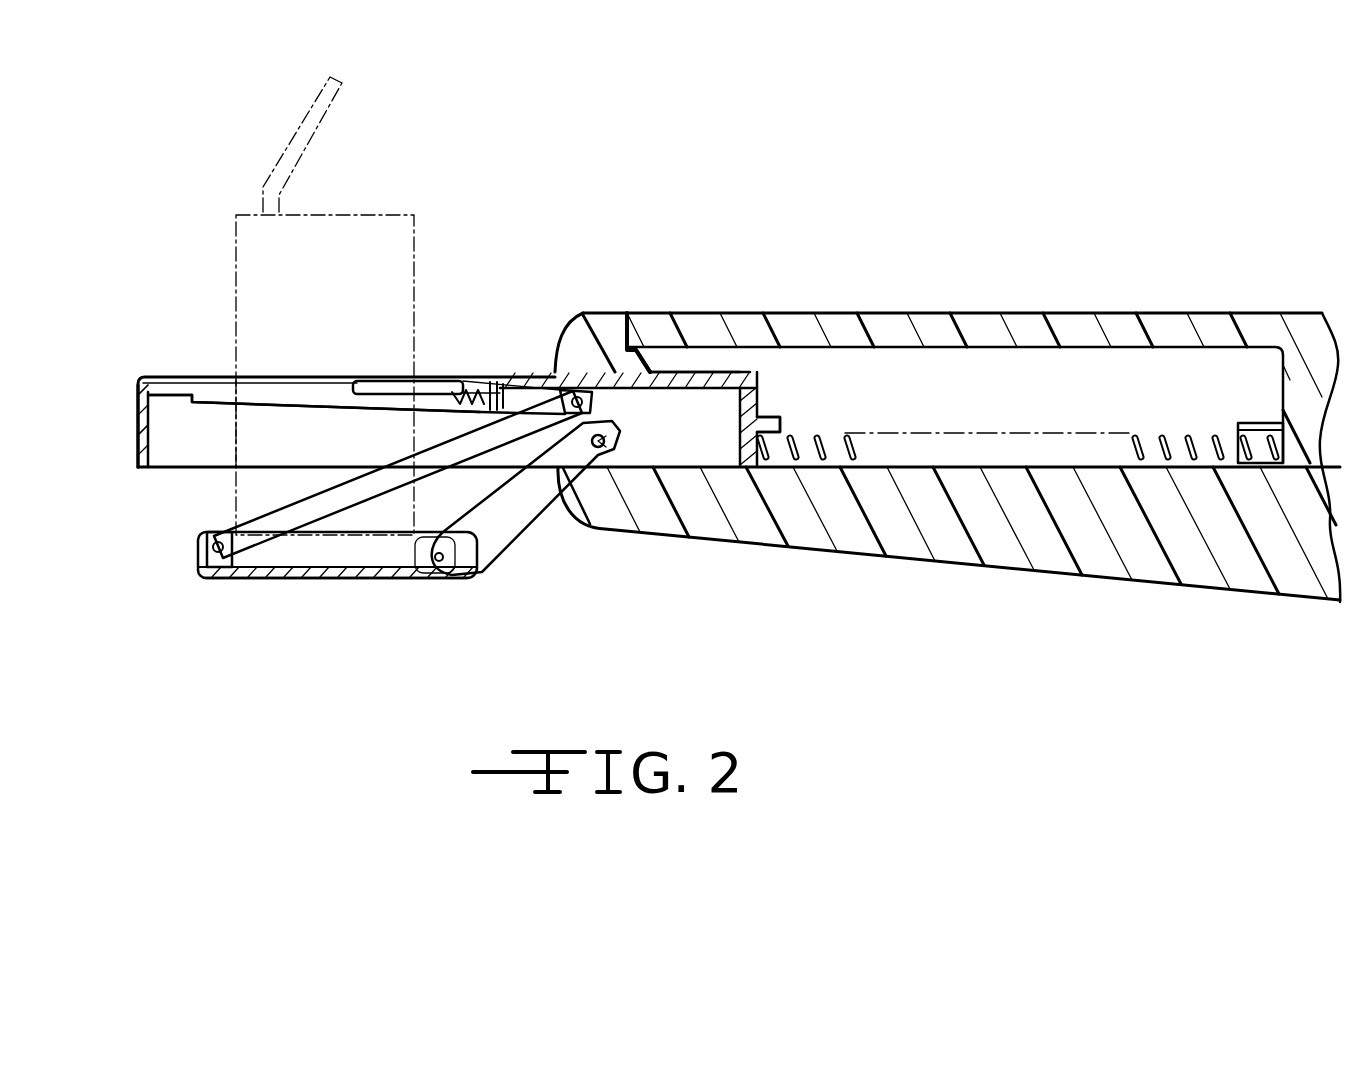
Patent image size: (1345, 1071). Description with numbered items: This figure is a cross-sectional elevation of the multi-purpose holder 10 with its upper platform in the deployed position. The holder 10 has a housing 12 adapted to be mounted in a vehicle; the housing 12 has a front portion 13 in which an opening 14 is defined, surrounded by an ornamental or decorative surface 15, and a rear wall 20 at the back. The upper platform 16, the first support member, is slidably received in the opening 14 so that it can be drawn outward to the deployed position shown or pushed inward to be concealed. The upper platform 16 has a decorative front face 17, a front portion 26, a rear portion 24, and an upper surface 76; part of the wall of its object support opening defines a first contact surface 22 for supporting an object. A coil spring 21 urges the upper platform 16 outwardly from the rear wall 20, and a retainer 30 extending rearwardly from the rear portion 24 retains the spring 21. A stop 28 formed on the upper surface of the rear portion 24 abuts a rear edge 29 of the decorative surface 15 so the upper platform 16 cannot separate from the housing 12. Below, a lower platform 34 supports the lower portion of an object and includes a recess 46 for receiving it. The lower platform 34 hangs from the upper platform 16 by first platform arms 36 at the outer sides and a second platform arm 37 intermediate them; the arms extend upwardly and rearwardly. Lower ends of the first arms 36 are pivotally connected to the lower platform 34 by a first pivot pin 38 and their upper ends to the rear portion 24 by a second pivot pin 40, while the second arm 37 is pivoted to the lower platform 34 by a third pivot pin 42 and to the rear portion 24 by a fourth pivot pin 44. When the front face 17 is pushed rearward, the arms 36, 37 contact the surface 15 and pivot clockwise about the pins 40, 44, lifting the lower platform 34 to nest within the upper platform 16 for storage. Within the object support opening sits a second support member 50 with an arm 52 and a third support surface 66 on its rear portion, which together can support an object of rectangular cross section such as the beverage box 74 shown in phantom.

The multi-purpose holder 10 is at (877, 210).
The housing 12 is at (1166, 300).
The front portion 13 is at (625, 312).
The opening 14 is at (605, 470).
The decorative surface 15 is at (540, 375).
The upper platform 16 is at (125, 385).
The front face 17 is at (135, 440).
The rear wall 20 is at (1283, 375).
The coil spring 21 is at (1135, 432).
The first contact surface 22 is at (208, 385).
The rear portion 24 is at (522, 378).
The front portion 26 is at (152, 385).
The stop 28 is at (655, 355).
The rear edge 29 is at (650, 343).
The retainer 30 is at (775, 420).
The lower platform 34 is at (485, 585).
The first platform arms 36 is at (500, 508).
The second platform arm 37 is at (285, 520).
The first pivot pin 38 is at (457, 580).
The second pivot pin 40 is at (612, 442).
The third pivot pin 42 is at (210, 552).
The fourth pivot pin 44 is at (590, 402).
The recess 46 is at (418, 578).
The second support member 50 is at (450, 366).
The arm 52 is at (378, 395).
The third support surface 66 is at (385, 380).
The beverage box 74 is at (352, 212).
The upper surface 76 is at (270, 378).